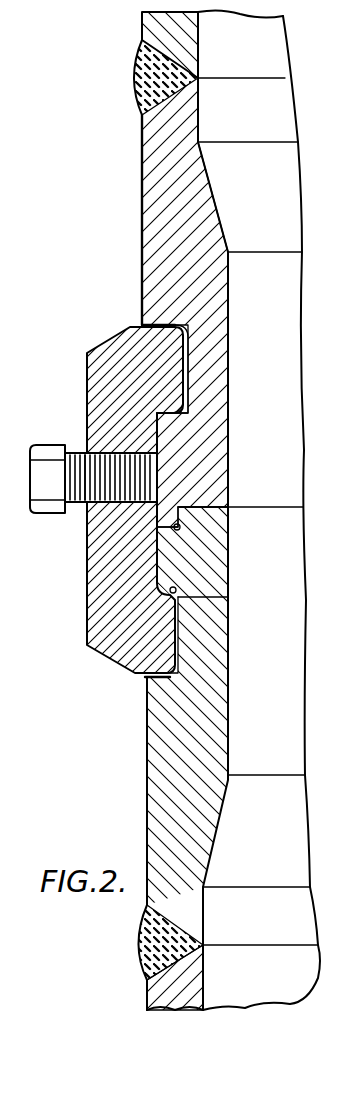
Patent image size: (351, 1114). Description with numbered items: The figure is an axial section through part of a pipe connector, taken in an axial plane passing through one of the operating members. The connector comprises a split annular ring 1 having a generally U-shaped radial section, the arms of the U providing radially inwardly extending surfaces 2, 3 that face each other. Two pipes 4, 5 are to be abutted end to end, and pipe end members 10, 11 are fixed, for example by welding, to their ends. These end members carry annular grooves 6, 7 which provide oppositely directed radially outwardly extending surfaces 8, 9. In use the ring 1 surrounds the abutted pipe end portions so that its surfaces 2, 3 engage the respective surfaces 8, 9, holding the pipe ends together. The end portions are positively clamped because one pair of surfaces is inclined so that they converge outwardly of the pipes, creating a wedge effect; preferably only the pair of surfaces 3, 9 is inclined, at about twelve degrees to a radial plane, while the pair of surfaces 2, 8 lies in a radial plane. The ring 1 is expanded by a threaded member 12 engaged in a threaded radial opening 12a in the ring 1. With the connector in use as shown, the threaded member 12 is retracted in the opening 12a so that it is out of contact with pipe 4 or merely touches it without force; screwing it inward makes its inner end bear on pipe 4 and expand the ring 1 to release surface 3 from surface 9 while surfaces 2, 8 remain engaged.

The split annular ring 1 is at (123, 633).
The radially inwardly extending surface 2 is at (175, 415).
The radially inwardly extending surface 3 is at (160, 583).
The pipe 4 is at (165, 42).
The pipe 5 is at (187, 987).
The annular groove 6 is at (187, 360).
The annular groove 7 is at (177, 643).
The radially outwardly extending surface 8 is at (177, 407).
The radially outwardly extending surface 9 is at (176, 592).
The pipe end member 10 is at (205, 208).
The pipe end member 11 is at (202, 748).
The threaded member 12 is at (80, 505).
The threaded radial opening 12a is at (98, 493).